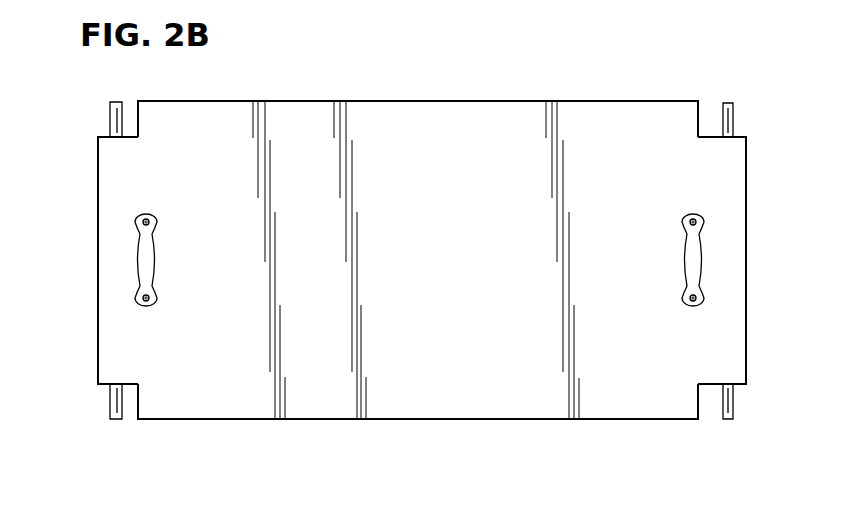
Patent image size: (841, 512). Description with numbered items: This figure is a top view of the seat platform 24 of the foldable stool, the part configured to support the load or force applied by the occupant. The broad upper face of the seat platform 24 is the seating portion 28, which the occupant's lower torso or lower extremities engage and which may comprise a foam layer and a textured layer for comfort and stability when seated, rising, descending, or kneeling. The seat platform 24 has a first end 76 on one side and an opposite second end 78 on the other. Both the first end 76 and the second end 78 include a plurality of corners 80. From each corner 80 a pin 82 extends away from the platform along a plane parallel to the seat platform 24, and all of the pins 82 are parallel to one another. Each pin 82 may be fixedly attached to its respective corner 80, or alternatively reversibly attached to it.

The seat platform 24 is at (435, 100).
The seating portion 28 is at (455, 269).
The first end 76 is at (98, 245).
The second end 78 is at (746, 260).
The corners 80 is at (104, 137).
The pin 82 is at (117, 101).